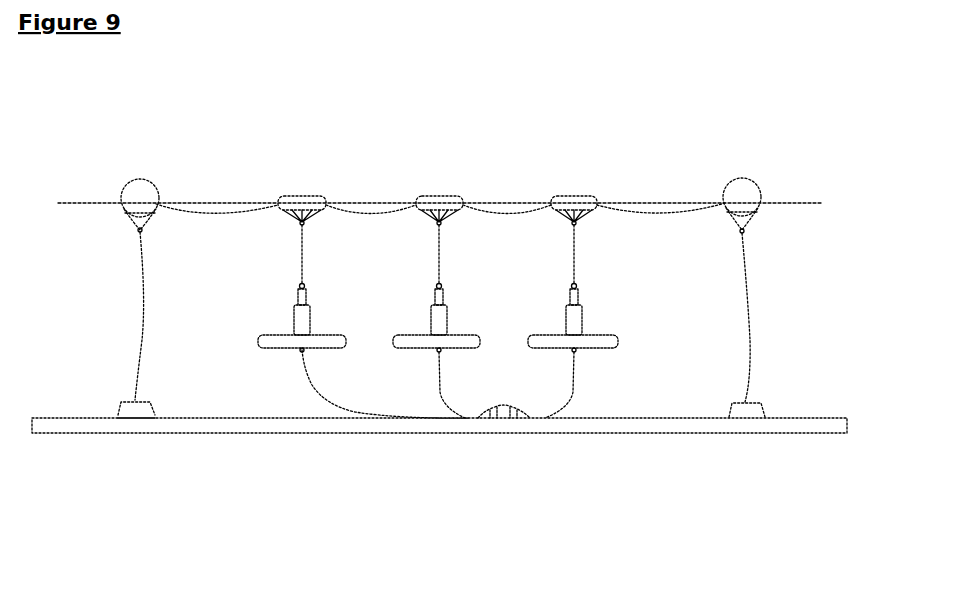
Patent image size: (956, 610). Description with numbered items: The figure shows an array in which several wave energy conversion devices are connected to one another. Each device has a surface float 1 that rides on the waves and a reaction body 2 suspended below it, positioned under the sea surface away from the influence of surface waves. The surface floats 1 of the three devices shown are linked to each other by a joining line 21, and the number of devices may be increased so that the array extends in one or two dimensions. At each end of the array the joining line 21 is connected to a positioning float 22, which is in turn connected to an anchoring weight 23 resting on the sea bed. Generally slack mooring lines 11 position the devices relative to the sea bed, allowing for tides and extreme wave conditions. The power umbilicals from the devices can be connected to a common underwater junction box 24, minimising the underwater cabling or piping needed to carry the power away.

The surface float 1 is at (302, 197).
The reaction body 2 is at (607, 341).
The mooring lines 11 is at (145, 308).
The joining line 21 is at (508, 212).
The positioning floats 22 is at (745, 191).
The anchoring weights 23 is at (745, 410).
The underwater junction box 24 is at (503, 410).